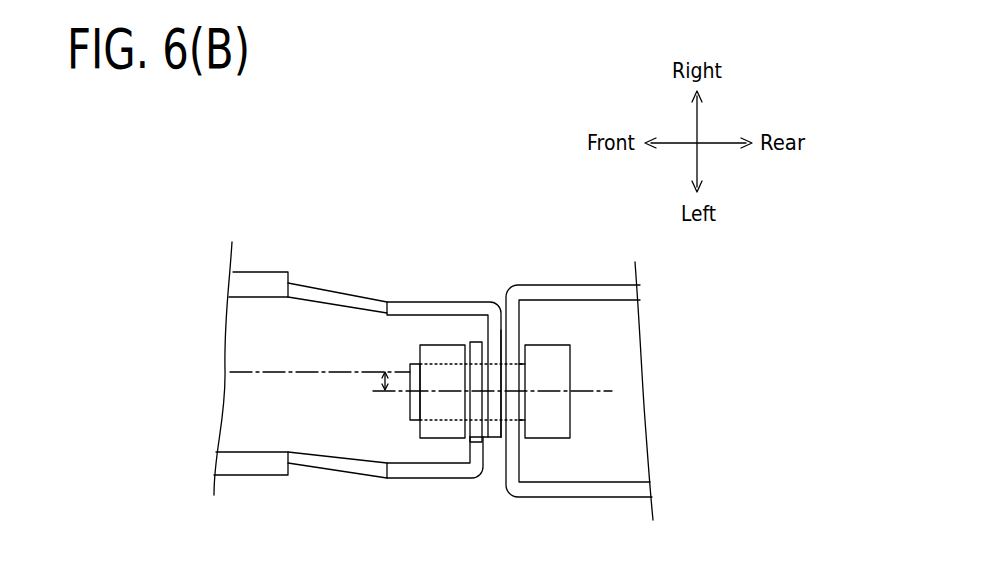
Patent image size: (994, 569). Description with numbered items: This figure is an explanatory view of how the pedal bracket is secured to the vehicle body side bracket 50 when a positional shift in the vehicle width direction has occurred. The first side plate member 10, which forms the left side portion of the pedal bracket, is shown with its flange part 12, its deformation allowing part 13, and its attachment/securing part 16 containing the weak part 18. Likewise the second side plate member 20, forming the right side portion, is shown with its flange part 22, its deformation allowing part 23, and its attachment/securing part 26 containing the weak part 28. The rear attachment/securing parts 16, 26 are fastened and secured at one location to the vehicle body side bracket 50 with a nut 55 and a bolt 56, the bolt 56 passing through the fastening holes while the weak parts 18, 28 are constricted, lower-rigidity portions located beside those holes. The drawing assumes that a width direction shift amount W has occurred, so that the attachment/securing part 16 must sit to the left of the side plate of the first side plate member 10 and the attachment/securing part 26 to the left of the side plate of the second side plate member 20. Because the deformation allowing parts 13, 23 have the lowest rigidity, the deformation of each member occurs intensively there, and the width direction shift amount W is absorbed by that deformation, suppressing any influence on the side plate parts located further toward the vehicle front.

The first side plate member 10 is at (356, 497).
The flange part 12 is at (250, 470).
The deformation allowing part 13 is at (323, 484).
The attachment/securing part 16 is at (477, 348).
The weak part 18 is at (477, 448).
The second side plate member 20 is at (367, 300).
The flange part 22 is at (253, 283).
The deformation allowing part 23 is at (333, 277).
The attachment/securing part 26 is at (500, 442).
The weak part 28 is at (495, 323).
The vehicle body side bracket 50 is at (585, 292).
The nut 55 is at (432, 427).
The bolt 56 is at (550, 357).
The width direction shift amount W is at (380, 385).